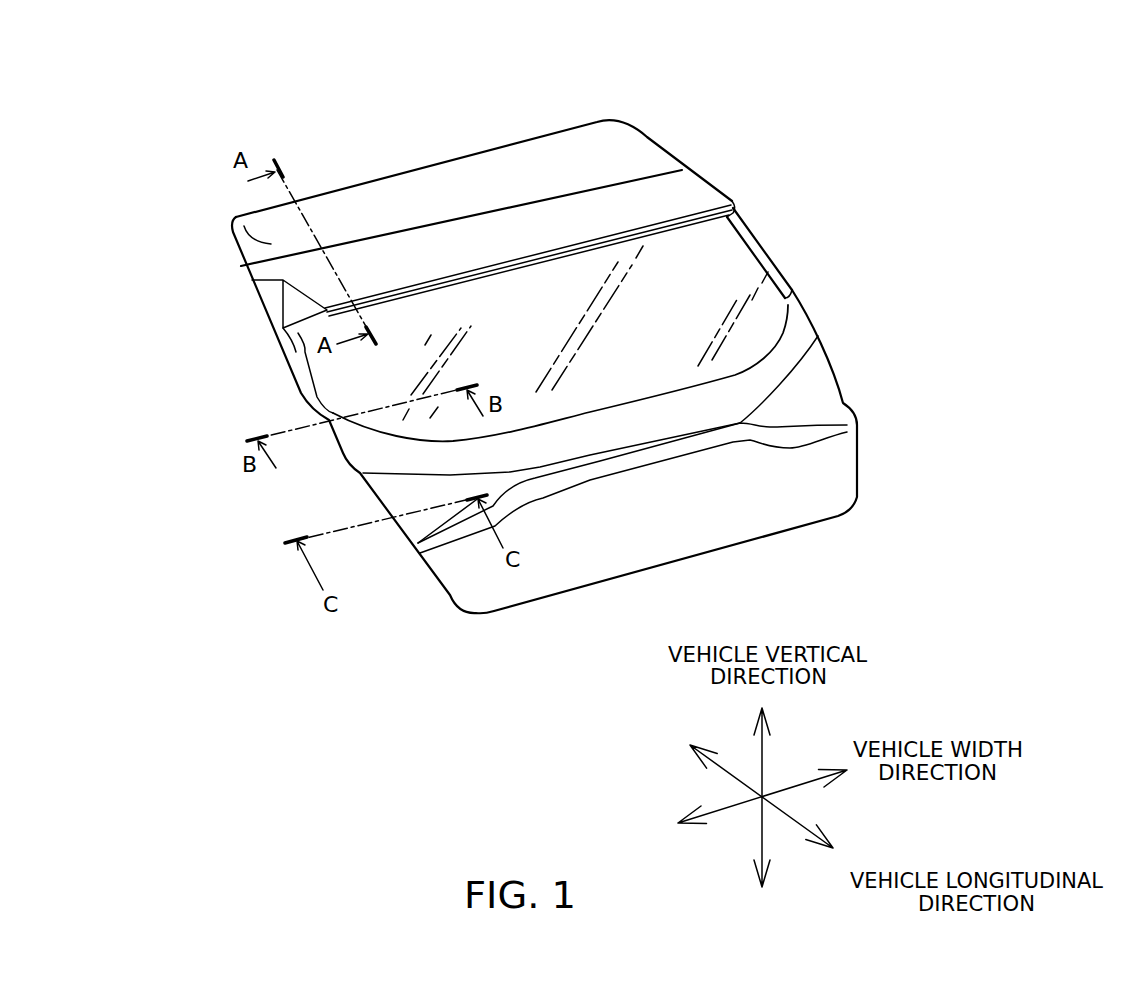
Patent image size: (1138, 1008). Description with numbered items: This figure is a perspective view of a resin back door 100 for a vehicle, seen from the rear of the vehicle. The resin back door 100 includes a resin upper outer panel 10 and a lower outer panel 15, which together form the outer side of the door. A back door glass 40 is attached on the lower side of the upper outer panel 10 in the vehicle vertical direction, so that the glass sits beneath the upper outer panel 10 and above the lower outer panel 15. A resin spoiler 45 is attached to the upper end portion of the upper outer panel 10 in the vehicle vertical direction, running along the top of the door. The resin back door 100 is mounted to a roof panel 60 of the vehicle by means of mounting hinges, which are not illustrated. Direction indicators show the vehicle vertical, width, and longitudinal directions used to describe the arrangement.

The resin back door 100 is at (838, 135).
The upper outer panel 10 is at (653, 177).
The roof panel 60 is at (452, 172).
The spoiler 45 is at (692, 198).
The back door glass 40 is at (697, 275).
The lower outer panel 15 is at (800, 344).